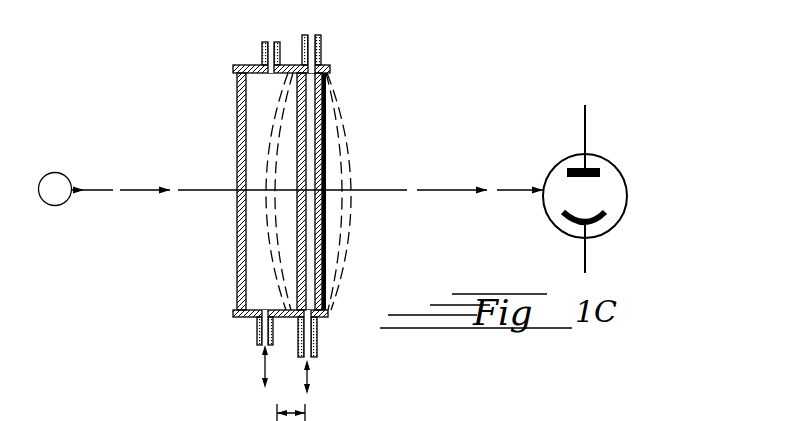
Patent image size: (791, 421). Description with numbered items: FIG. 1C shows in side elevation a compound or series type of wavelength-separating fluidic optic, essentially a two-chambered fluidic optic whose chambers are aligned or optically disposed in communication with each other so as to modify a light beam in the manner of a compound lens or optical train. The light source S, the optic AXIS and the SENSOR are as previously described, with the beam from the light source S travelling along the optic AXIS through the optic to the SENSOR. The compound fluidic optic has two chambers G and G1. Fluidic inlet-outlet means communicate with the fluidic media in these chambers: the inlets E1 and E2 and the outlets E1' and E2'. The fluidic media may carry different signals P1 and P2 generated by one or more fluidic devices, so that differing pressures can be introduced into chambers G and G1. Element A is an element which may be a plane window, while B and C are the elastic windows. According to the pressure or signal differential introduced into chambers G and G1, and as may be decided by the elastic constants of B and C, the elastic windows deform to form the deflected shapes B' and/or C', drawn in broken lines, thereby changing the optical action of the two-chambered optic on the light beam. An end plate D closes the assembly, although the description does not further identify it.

The plane window A is at (237, 275).
The end plate D is at (245, 318).
The fluidic outlet E1' is at (257, 41).
The fluidic outlet E2' is at (318, 41).
The fluidic inlet E1 is at (245, 333).
The fluidic inlet E2 is at (325, 333).
The elastic window C is at (333, 191).
The deflected elastic window C' is at (322, 191).
The elastic window B is at (345, 191).
The deflected elastic window B' is at (353, 191).
The chamber G is at (256, 131).
The chamber G1 is at (310, 211).
The fluidic signal P1 is at (265, 372).
The fluidic signal P2 is at (307, 373).
The light source S is at (55, 189).
The optic axis AXIS is at (307, 178).
The sensor SENSOR is at (619, 214).